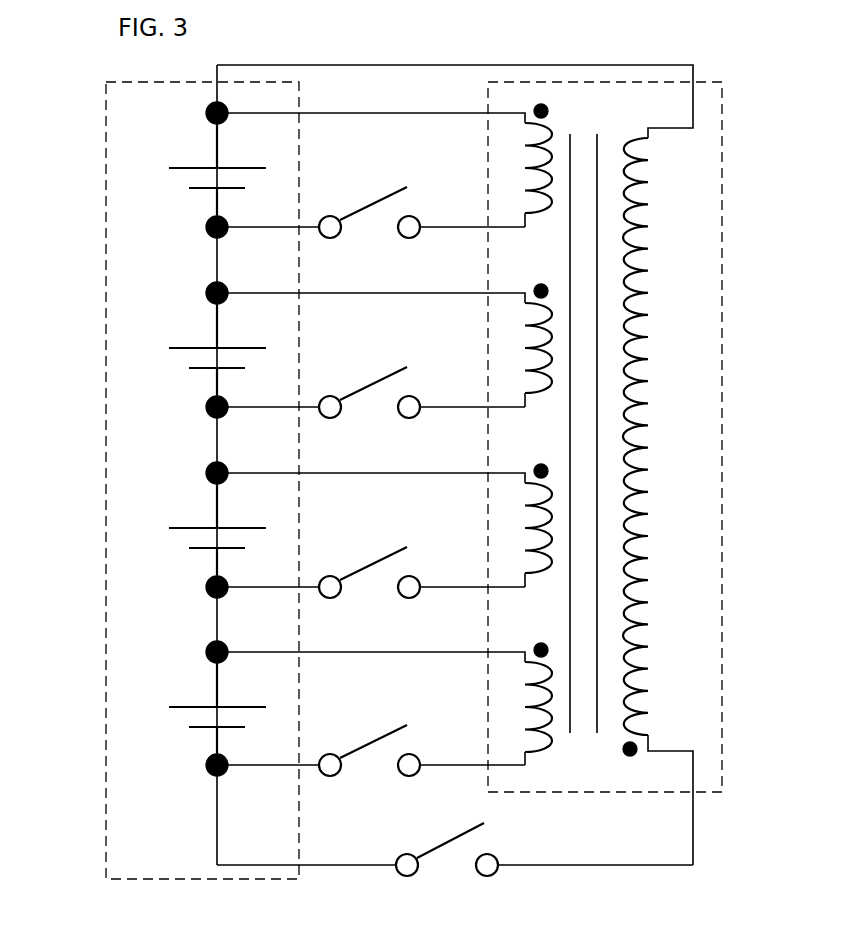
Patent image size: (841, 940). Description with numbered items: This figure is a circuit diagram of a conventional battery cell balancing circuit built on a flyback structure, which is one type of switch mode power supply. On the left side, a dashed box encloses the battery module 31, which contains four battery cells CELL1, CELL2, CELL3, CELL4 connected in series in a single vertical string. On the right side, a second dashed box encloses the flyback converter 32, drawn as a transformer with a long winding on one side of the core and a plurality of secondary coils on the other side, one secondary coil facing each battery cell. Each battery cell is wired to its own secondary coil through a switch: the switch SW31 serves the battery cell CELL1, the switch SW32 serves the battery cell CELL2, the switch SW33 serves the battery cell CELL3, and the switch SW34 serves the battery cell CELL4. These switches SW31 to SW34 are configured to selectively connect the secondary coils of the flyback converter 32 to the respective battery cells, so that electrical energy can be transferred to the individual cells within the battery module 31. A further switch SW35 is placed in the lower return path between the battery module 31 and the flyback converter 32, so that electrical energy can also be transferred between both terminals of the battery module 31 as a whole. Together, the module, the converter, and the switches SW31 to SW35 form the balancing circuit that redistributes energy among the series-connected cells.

The battery module 31 is at (162, 480).
The flyback converter 32 is at (722, 257).
The battery cell CELL1 is at (194, 170).
The battery cell CELL2 is at (194, 350).
The battery cell CELL3 is at (194, 530).
The battery cell CELL4 is at (194, 708).
The switch SW31 is at (376, 229).
The switch SW32 is at (376, 409).
The switch SW33 is at (376, 589).
The switch SW34 is at (376, 767).
The switch SW35 is at (455, 864).